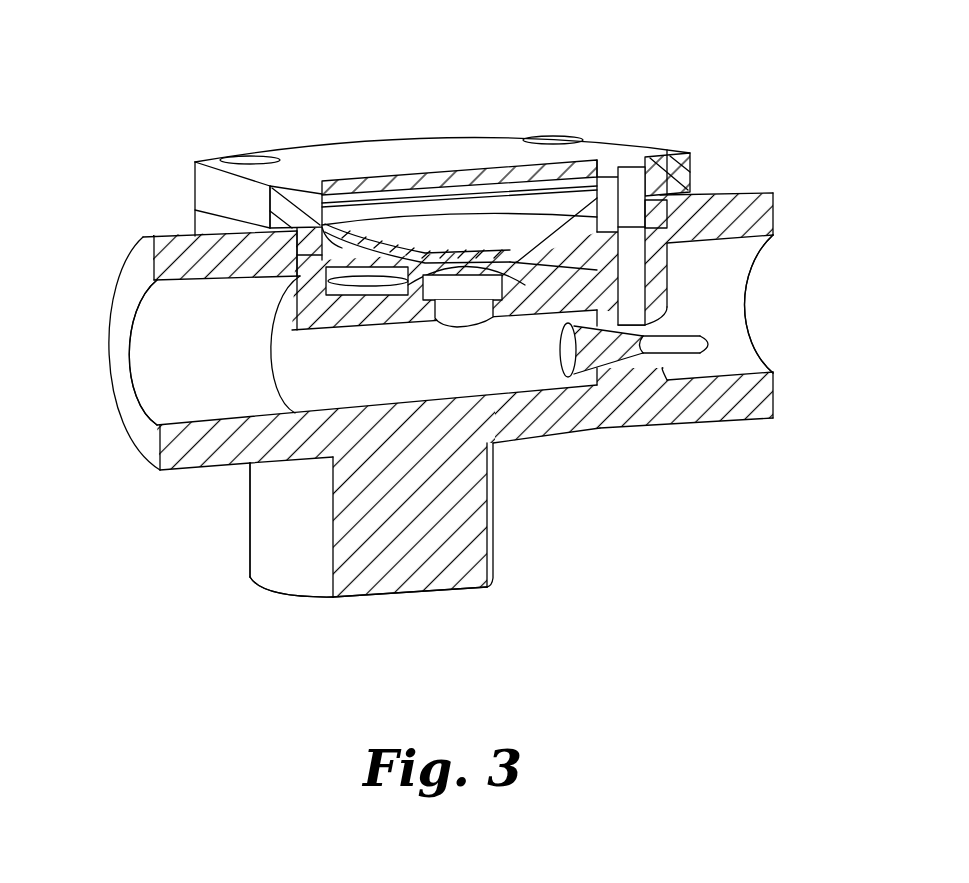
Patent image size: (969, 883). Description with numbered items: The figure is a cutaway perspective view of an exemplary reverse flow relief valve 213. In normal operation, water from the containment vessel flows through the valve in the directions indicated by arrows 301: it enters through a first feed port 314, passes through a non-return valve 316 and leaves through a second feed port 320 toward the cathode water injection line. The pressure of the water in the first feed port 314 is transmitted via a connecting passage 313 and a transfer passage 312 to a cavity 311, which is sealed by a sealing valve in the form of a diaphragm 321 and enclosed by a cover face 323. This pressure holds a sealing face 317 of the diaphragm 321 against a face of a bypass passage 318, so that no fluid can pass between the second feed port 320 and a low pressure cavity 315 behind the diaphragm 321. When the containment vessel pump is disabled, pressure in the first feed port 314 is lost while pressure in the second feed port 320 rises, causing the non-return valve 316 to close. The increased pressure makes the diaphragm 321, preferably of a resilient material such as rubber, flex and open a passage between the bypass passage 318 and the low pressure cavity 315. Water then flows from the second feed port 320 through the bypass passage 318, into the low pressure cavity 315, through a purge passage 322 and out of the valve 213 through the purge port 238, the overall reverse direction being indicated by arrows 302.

The reverse flow relief valve 213 is at (192, 72).
The purge port 238 is at (252, 578).
The arrows indicating normal flow direction 301 is at (93, 332).
The arrows indicating reverse flow direction 302 is at (92, 364).
The cavity 311 is at (565, 192).
The transfer passage 312 is at (605, 182).
The connecting passage 313 is at (650, 215).
The first feed port 314 is at (732, 337).
The low pressure cavity 315 is at (573, 263).
The non-return valve 316 is at (566, 349).
The sealing face 317 is at (414, 263).
The bypass passage 318 is at (456, 308).
The second feed port 320 is at (175, 362).
The diaphragm 321 is at (346, 255).
The purge passage 322 is at (370, 281).
The cover face 323 is at (300, 158).